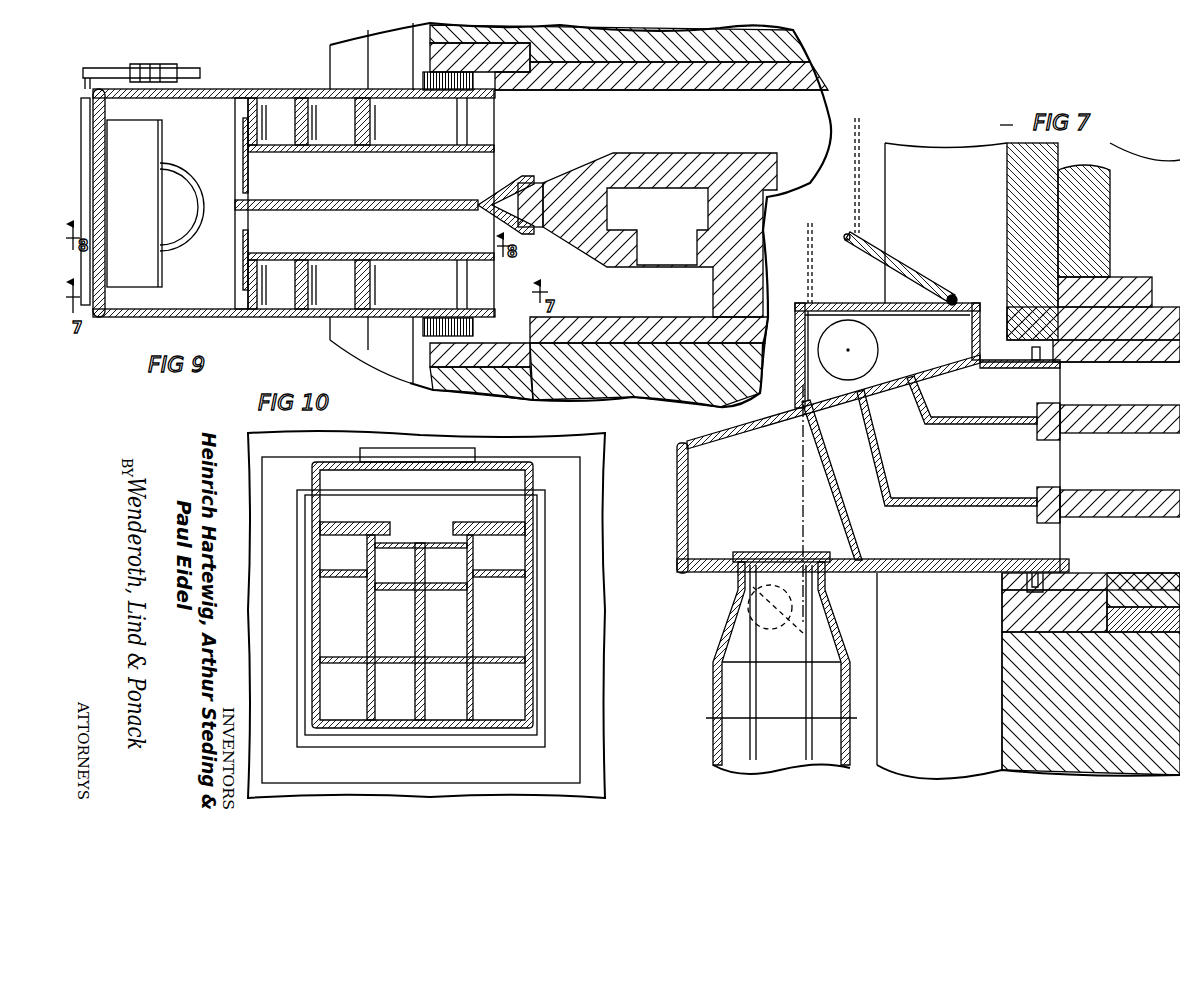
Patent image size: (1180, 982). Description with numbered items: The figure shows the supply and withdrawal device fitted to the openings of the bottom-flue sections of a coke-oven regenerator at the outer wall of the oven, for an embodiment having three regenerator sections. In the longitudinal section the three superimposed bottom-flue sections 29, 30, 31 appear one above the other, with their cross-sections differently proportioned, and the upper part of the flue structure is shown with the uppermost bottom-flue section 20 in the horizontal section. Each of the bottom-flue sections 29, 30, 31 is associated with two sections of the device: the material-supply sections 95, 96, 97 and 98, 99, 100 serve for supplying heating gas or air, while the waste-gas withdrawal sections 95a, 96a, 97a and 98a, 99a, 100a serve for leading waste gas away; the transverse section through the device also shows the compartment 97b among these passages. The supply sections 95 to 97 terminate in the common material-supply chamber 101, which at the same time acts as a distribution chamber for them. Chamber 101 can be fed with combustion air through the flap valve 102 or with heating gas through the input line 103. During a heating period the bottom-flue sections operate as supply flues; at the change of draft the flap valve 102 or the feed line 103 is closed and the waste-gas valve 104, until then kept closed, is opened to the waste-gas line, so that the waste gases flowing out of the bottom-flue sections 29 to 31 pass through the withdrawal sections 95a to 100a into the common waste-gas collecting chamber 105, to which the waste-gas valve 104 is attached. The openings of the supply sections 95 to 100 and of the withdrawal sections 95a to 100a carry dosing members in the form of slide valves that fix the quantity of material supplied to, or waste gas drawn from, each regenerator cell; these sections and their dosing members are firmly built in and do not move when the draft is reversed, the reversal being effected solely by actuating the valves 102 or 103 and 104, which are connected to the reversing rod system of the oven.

In FIG. 9, the uppermost bottom-flue section 20 is at (628, 290).
In FIG. 9, the bottom-flue section 29 is at (592, 140).
In FIG. 7, the bottom-flue section 29 is at (1158, 399).
In FIG. 7, the bottom-flue section 30 is at (1153, 471).
In FIG. 7, the bottom-flue section 31 is at (1140, 553).
In FIG. 9, the material-supply section 95 is at (283, 125).
In FIG. 10, the material-supply section 95 is at (350, 707).
In FIG. 10, the waste-gas withdrawal section 95a is at (408, 707).
In FIG. 9, the material-supply section 96 is at (337, 125).
In FIG. 10, the material-supply section 96 is at (349, 638).
In FIG. 10, the waste-gas withdrawal section 96a is at (410, 638).
In FIG. 9, the material-supply section 97 is at (395, 125).
In FIG. 10, the material-supply section 97 is at (347, 565).
In FIG. 9, the waste-gas withdrawal section 97a is at (390, 186).
In FIG. 10, the compartment 97b is at (407, 574).
In FIG. 9, the material-supply section 98 is at (283, 286).
In FIG. 7, the material-supply section 98 is at (957, 549).
In FIG. 10, the material-supply section 98 is at (508, 707).
In FIG. 10, the waste-gas withdrawal section 98a is at (460, 707).
In FIG. 9, the material-supply section 99 is at (337, 286).
In FIG. 7, the material-supply section 99 is at (977, 471).
In FIG. 10, the material-supply section 99 is at (507, 638).
In FIG. 10, the waste-gas withdrawal section 99a is at (458, 638).
In FIG. 9, the material-supply section 100 is at (432, 285).
In FIG. 7, the material-supply section 100 is at (1003, 415).
In FIG. 10, the material-supply section 100 is at (506, 565).
In FIG. 9, the waste-gas withdrawal section 100a is at (398, 242).
In FIG. 10, the waste-gas withdrawal section 100a is at (463, 574).
In FIG. 7, the material-supply chamber 101 is at (928, 339).
In FIG. 7, the flap valve 102 is at (948, 295).
In FIG. 10, the flap valve 102 is at (440, 498).
In FIG. 7, the input line 103 is at (895, 362).
In FIG. 9, the waste-gas valve 104 is at (157, 290).
In FIG. 7, the waste-gas valve 104 is at (768, 553).
In FIG. 9, the waste-gas collecting chamber 105 is at (210, 292).
In FIG. 7, the waste-gas collecting chamber 105 is at (760, 468).